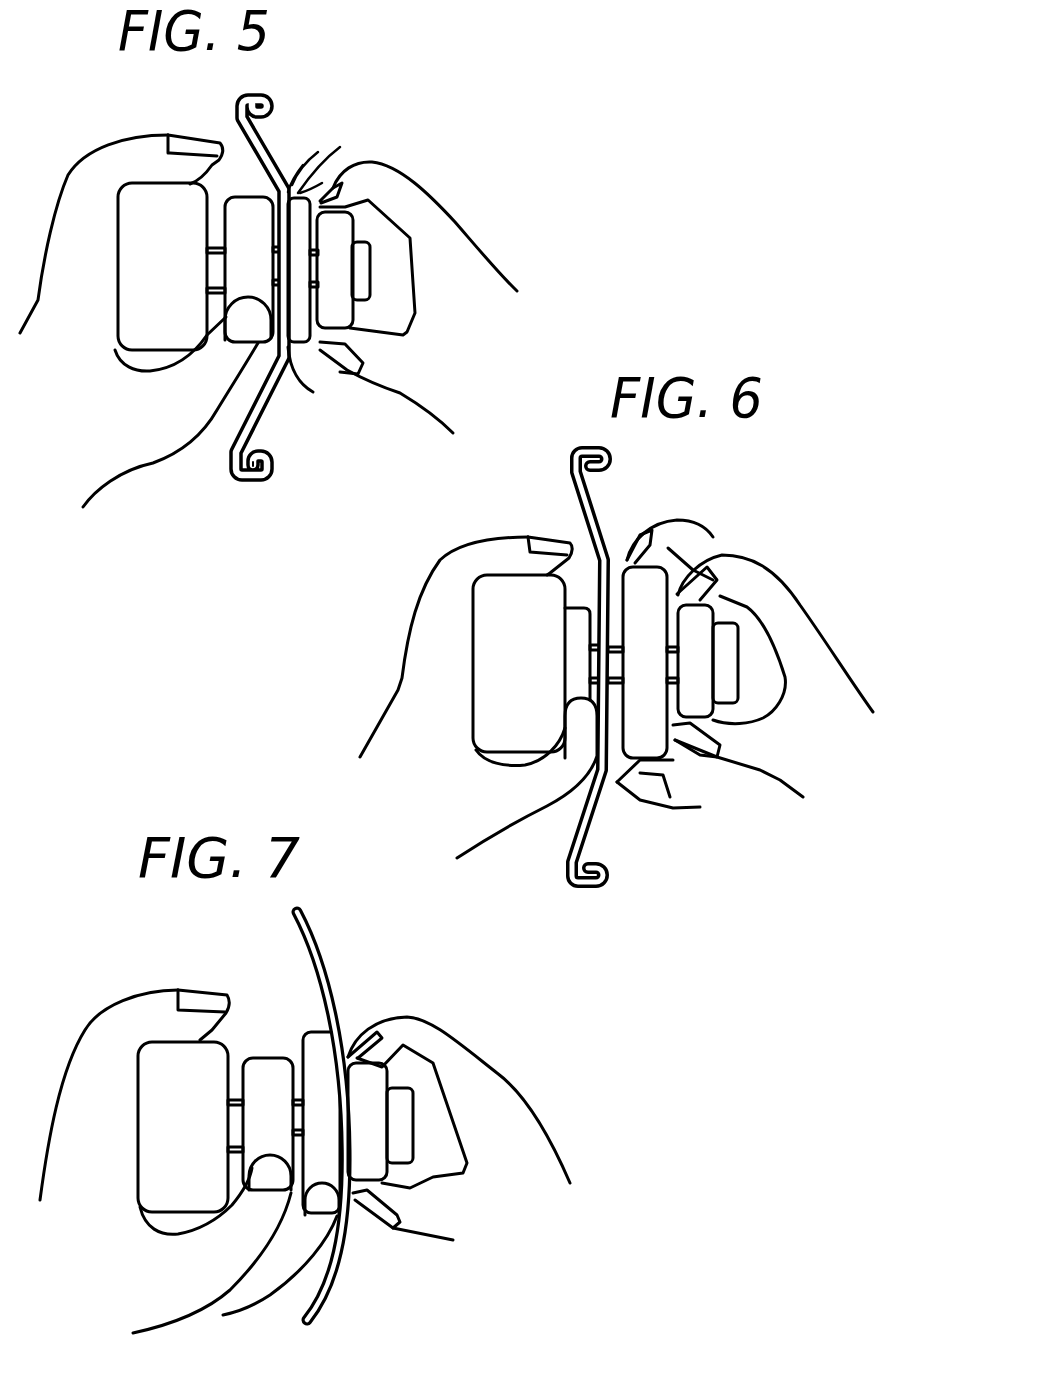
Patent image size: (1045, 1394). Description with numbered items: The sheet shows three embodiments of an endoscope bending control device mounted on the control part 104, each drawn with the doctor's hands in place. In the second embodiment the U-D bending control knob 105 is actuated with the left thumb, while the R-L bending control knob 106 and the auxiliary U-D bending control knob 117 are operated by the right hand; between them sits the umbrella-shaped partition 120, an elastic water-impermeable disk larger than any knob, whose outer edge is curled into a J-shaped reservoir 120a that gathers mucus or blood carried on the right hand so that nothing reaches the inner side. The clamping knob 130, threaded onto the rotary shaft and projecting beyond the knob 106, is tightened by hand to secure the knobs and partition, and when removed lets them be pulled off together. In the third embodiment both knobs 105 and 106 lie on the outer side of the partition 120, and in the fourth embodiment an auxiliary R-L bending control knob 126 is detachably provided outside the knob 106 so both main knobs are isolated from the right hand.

In FIG. 5, the control part 104 is at (141, 192).
In FIG. 6, the control part 104 is at (500, 588).
In FIG. 7, the control part 104 is at (167, 1063).
In FIG. 5, the U-D bending control knob 105 is at (250, 195).
In FIG. 6, the U-D bending control knob 105 is at (664, 578).
In FIG. 7, the U-D bending control knob 105 is at (250, 1060).
In FIG. 5, the R-L bending control knob 106 is at (334, 267).
In FIG. 6, the R-L bending control knob 106 is at (718, 617).
In FIG. 7, the R-L bending control knob 106 is at (309, 1040).
In FIG. 5, the auxiliary U-D bending control knob 117 is at (340, 229).
In FIG. 5, the partition 120 is at (266, 393).
In FIG. 6, the partition 120 is at (600, 517).
In FIG. 7, the partition 120 is at (343, 984).
In FIG. 5, the reservoir 120a is at (259, 477).
In FIG. 7, the auxiliary R-L bending control knob 126 is at (388, 1076).
In FIG. 5, the clamping knob 130 is at (360, 275).
In FIG. 6, the clamping knob 130 is at (726, 662).
In FIG. 7, the clamping knob 130 is at (401, 1131).